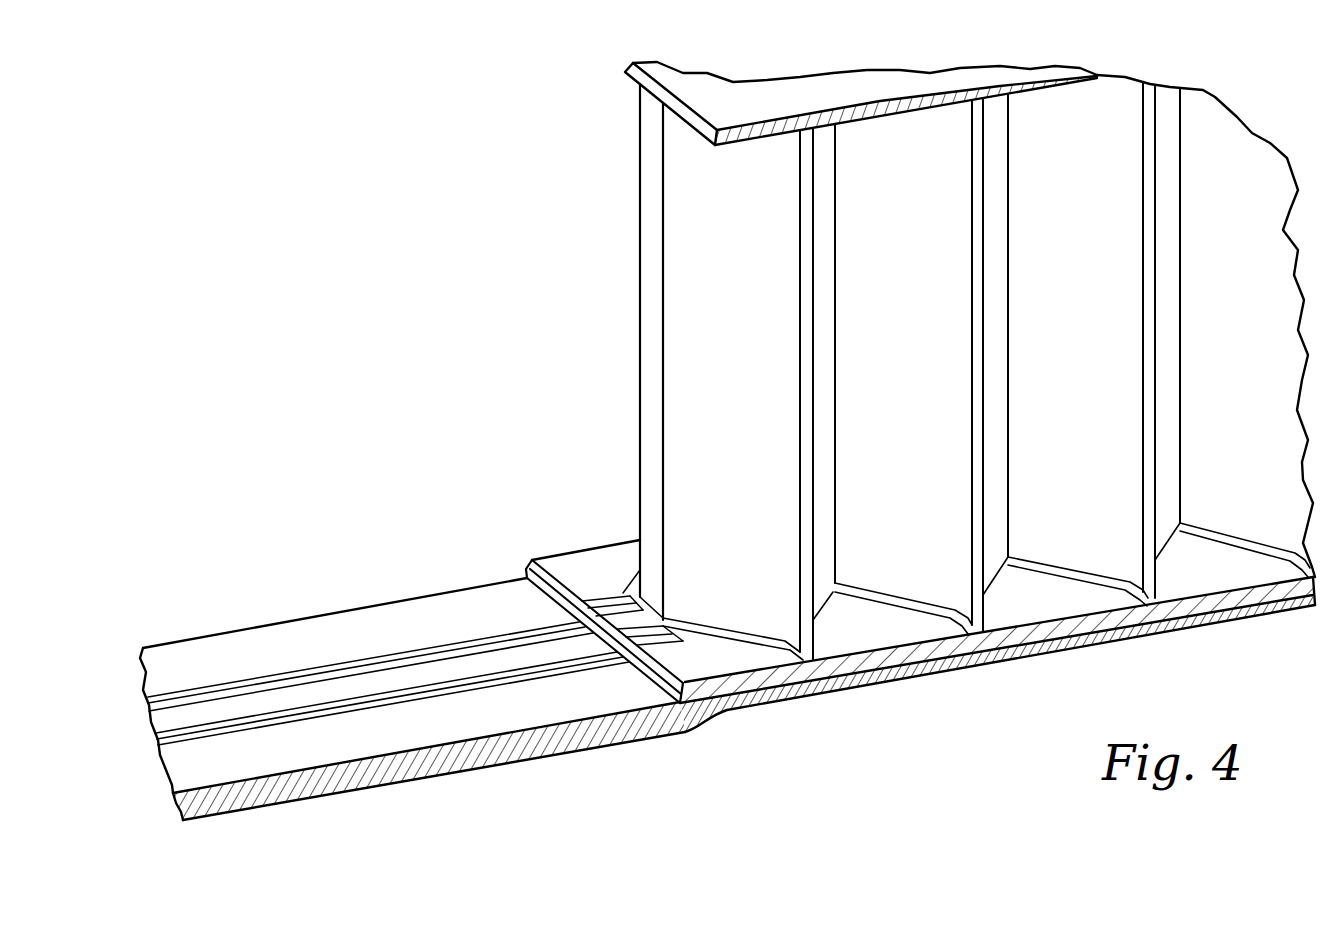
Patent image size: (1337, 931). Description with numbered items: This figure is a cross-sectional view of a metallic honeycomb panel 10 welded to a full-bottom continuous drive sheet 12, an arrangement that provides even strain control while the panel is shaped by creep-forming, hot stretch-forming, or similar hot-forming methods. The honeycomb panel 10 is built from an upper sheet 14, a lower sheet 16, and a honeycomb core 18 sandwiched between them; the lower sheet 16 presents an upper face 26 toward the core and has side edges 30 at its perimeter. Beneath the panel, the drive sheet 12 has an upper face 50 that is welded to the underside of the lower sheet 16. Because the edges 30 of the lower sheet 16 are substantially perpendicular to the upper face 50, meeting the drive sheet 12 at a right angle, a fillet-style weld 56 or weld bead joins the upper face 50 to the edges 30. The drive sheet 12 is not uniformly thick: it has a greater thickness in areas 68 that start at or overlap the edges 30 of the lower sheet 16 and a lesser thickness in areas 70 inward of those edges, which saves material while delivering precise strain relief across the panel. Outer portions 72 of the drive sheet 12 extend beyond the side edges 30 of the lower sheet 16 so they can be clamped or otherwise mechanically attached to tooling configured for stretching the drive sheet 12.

The metallic honeycomb panel 10 is at (562, 226).
The drive sheet 12 is at (290, 632).
The upper sheet 14 is at (783, 102).
The lower sheet 16 is at (556, 556).
The honeycomb core 18 is at (638, 325).
The upper face 26 is at (685, 672).
The side edges 30 is at (530, 562).
The upper face 50 is at (225, 674).
The fillet-style weld 56 is at (530, 568).
The areas 68 is at (455, 760).
The areas 70 is at (878, 683).
The outer portions 72 is at (317, 758).